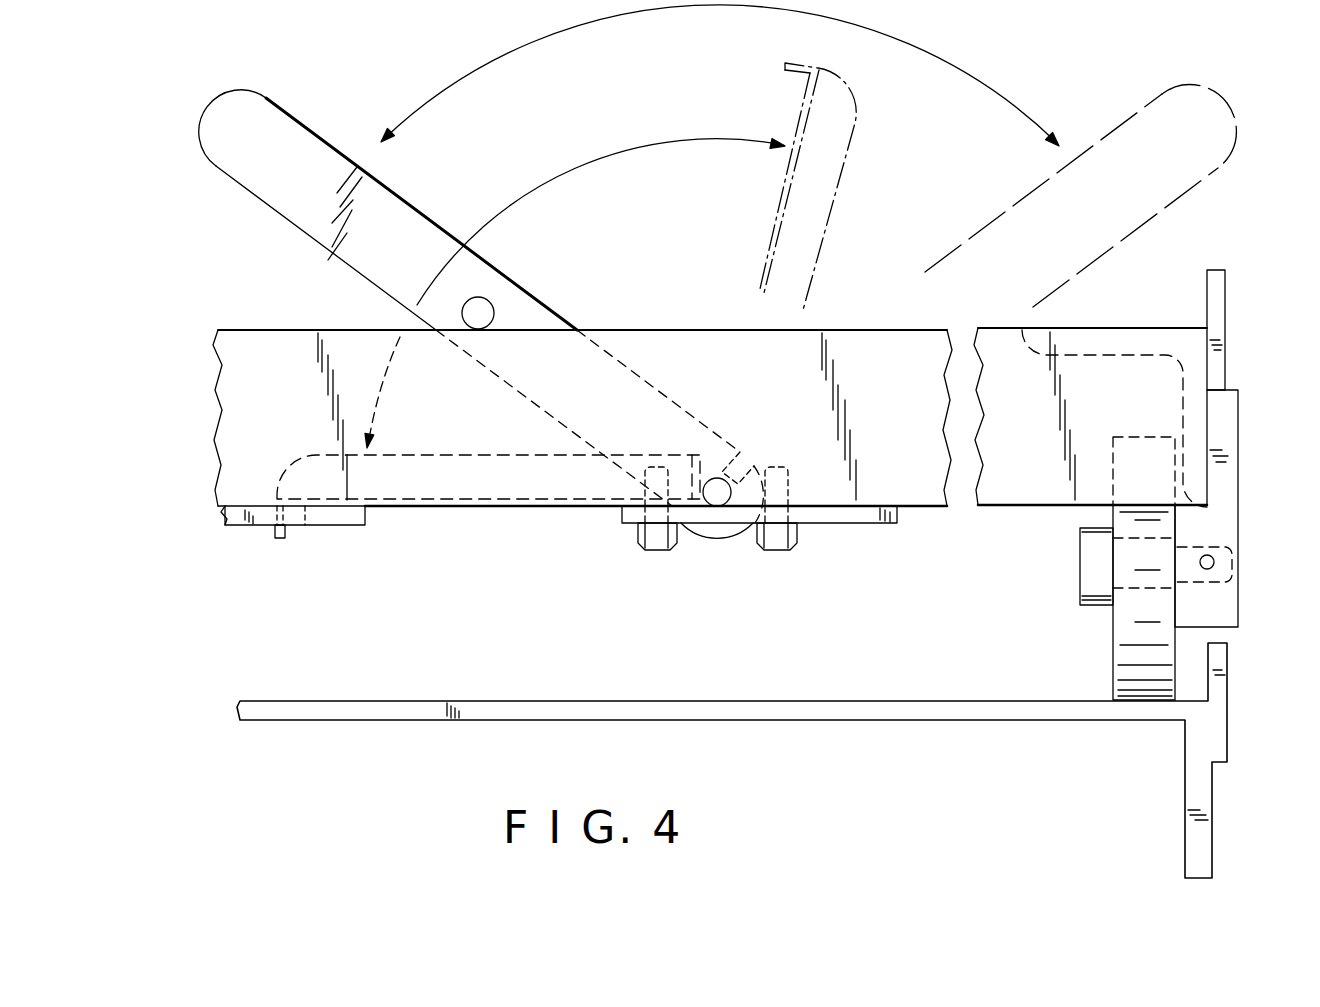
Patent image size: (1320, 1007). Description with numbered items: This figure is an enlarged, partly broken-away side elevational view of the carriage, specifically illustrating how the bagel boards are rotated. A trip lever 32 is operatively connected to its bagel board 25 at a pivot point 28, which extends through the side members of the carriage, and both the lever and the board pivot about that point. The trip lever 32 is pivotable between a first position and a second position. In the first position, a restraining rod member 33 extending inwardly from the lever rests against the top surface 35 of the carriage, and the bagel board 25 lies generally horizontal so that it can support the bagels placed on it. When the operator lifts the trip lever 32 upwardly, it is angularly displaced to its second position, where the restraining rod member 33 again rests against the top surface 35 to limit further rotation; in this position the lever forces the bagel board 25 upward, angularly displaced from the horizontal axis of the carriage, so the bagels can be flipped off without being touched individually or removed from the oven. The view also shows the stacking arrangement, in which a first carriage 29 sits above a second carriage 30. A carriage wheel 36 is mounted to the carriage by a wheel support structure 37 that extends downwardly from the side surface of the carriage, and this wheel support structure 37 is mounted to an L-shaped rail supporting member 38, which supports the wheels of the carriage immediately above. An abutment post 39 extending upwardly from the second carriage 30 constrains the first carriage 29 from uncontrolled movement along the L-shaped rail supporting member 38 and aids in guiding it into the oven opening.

The bagel board 25 is at (445, 485).
The pivot point 28 is at (717, 495).
The first carriage 29 is at (235, 413).
The second carriage 30 is at (305, 713).
The trip lever 32 is at (308, 147).
The restraining rod member 33 is at (485, 305).
The top surface 35 is at (618, 328).
The carriage wheel 36 is at (1127, 632).
The wheel support structure 37 is at (1227, 443).
The L-shaped rail supporting member 38 is at (1108, 345).
The abutment post 39 is at (1213, 282).